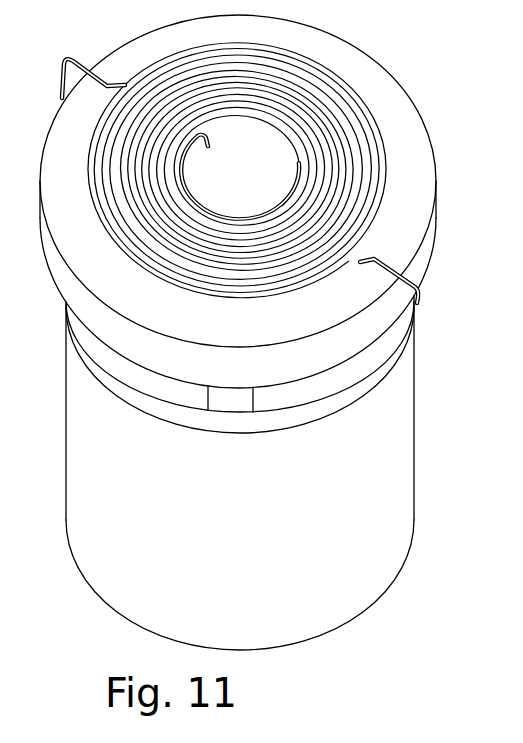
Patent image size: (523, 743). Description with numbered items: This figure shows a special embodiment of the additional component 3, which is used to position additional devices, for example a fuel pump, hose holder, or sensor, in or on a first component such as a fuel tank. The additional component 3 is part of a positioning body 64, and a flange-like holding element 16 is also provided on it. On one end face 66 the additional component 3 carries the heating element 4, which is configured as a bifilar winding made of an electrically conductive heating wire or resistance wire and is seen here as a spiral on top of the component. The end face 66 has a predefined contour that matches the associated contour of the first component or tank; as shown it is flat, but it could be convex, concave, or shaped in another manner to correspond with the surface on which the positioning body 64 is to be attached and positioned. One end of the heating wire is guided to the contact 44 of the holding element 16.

The additional component 3 is at (269, 201).
The heating element 4 is at (366, 127).
The flange-like holding element 16 is at (271, 403).
The contact 44 is at (237, 407).
The positioning body 64 is at (353, 527).
The end face 66 is at (403, 227).